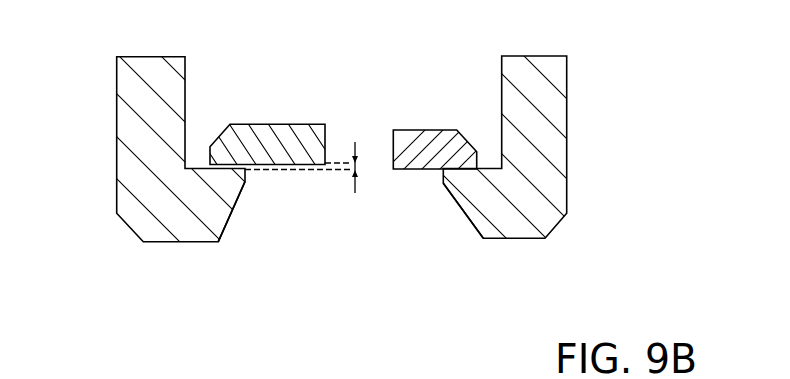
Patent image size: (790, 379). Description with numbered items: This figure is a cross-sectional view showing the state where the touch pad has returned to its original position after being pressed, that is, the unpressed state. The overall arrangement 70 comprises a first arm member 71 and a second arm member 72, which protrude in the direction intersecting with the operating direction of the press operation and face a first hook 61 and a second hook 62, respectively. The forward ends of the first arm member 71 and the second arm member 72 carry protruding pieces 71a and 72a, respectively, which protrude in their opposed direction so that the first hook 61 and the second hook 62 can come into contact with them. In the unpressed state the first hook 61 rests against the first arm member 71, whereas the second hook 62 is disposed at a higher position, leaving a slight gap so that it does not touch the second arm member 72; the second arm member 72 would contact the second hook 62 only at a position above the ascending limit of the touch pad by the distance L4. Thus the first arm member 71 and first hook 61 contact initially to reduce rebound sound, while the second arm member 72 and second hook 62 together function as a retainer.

The holder assembly 70 is at (359, 179).
The first arm member 71 is at (553, 110).
The protruding piece 71a is at (450, 198).
The second arm member 72 is at (143, 106).
The protruding piece 72a is at (230, 188).
The first hook 61 is at (440, 140).
The second hook 62 is at (272, 137).
The gap distance L4 is at (356, 167).